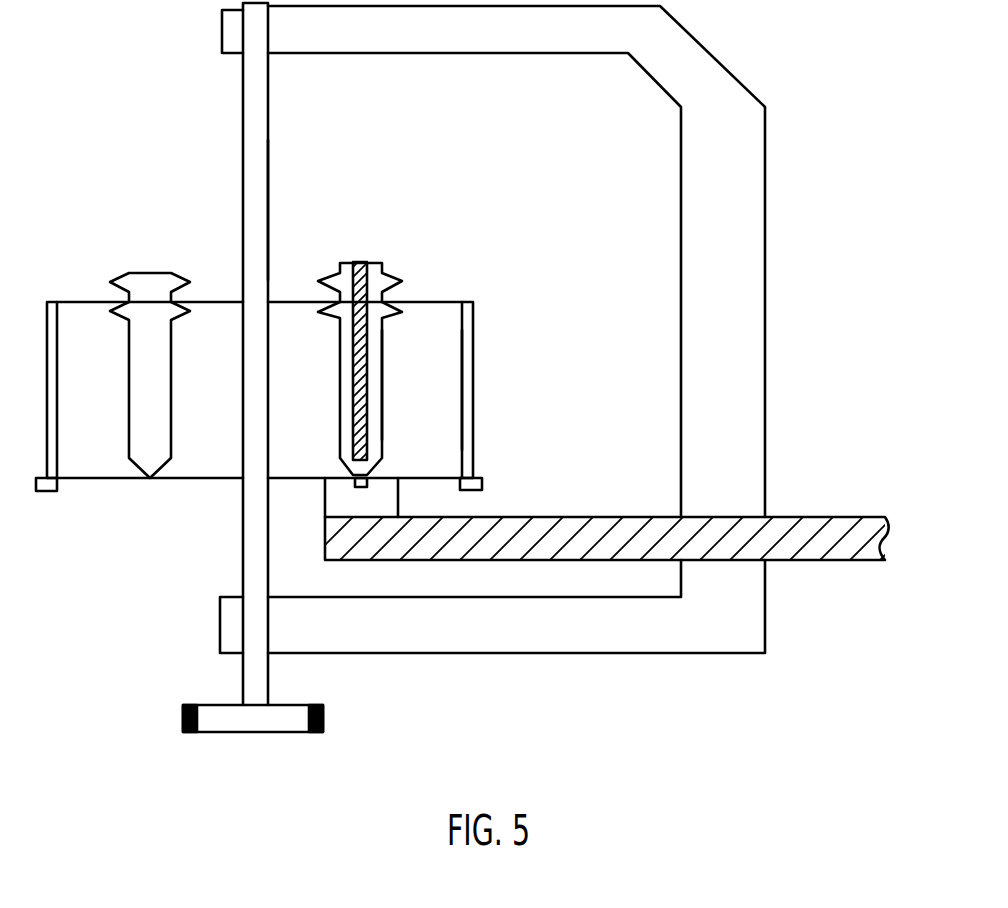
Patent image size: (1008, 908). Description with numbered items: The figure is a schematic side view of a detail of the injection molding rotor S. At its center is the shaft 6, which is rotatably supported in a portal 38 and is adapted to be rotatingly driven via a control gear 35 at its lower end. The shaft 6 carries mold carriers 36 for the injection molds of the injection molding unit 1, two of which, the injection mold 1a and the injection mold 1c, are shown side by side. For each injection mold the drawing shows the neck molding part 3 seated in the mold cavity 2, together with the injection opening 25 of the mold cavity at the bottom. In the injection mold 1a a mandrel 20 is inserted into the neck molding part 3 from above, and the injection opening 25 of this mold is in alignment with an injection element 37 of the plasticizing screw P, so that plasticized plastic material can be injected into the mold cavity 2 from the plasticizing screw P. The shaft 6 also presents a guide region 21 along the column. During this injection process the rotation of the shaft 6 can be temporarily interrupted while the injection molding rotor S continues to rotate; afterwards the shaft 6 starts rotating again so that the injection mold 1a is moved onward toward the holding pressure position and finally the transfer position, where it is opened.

The injection molding unit 1 is at (442, 243).
The injection mold 1a is at (431, 317).
The injection mold 1c is at (92, 319).
The mold cavity 2 is at (384, 351).
The neck molding part 3 is at (177, 283).
The shaft 6 is at (272, 130).
The mandrel 20 is at (358, 262).
The guide surface of column 21 is at (262, 210).
The injection opening 25 is at (372, 478).
The control gear 35 is at (299, 706).
The mold carrier 36 is at (473, 379).
The injection element 37 is at (336, 502).
The portal 38 is at (748, 250).
The plasticizing screw P is at (589, 515).
The injection molding rotor S is at (845, 192).